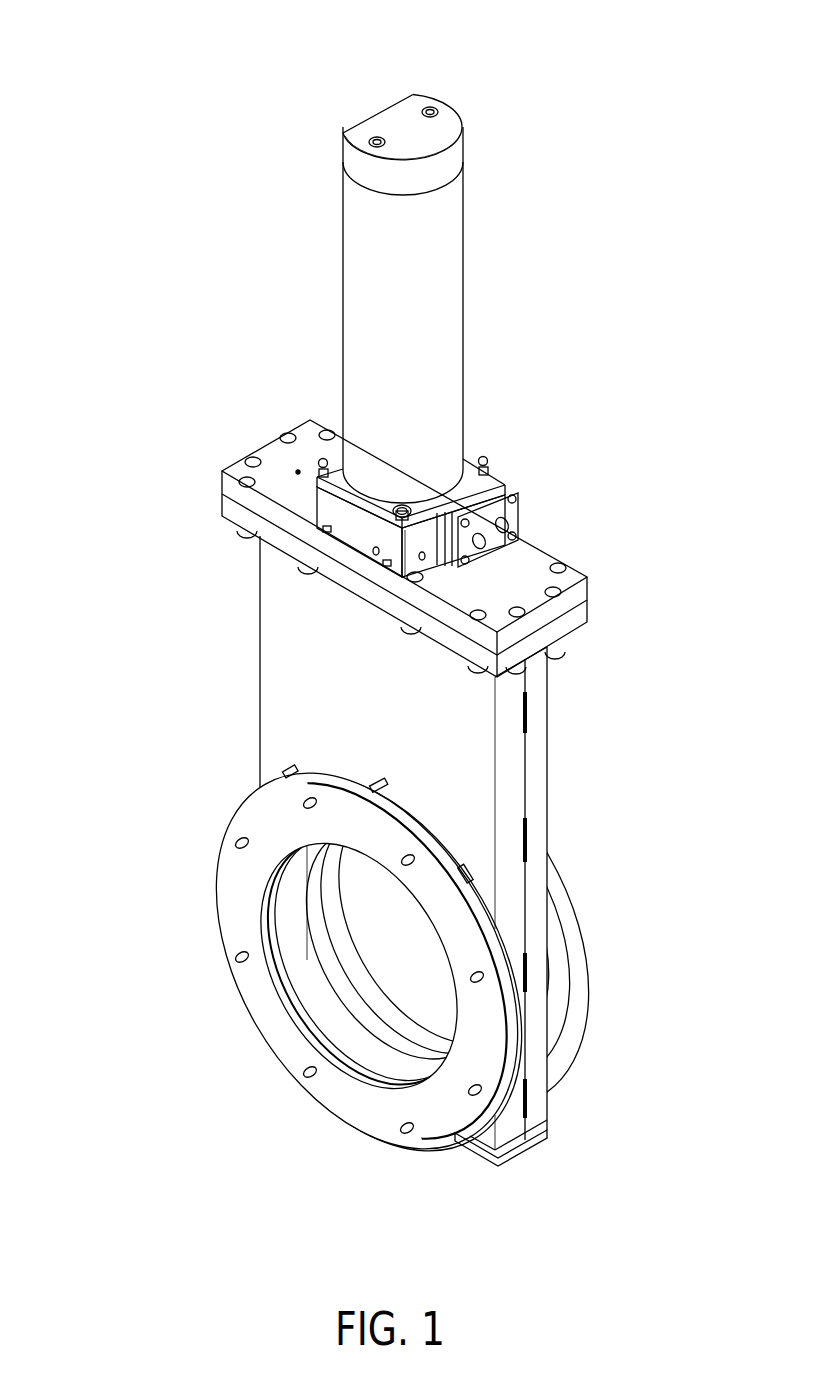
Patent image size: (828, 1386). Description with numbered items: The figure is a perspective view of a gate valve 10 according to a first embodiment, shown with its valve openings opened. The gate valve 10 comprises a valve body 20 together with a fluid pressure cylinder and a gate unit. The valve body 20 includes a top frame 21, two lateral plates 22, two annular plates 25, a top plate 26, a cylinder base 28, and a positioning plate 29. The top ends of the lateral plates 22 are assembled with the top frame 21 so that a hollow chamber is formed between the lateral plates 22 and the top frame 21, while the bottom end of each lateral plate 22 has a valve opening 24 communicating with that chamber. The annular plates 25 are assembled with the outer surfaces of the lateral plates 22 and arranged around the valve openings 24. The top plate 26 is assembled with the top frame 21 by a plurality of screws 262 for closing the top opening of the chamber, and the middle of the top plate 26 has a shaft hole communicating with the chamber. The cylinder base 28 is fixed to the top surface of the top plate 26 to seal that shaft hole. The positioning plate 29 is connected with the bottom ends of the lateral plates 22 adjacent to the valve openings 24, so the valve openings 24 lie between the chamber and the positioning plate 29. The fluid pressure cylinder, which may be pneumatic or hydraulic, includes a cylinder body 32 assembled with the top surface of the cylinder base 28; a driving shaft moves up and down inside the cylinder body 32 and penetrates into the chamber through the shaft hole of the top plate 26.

The gate valve 10 is at (601, 90).
The valve body 20 is at (200, 903).
The top frame 21 is at (230, 515).
The lateral plates 22 is at (295, 708).
The valve opening 24 is at (310, 990).
The annular plates 25 is at (380, 1112).
The top plate 26 is at (238, 468).
The screws 262 is at (242, 543).
The cylinder base 28 is at (353, 533).
The positioning plate 29 is at (480, 1158).
The cylinder body 32 is at (367, 294).